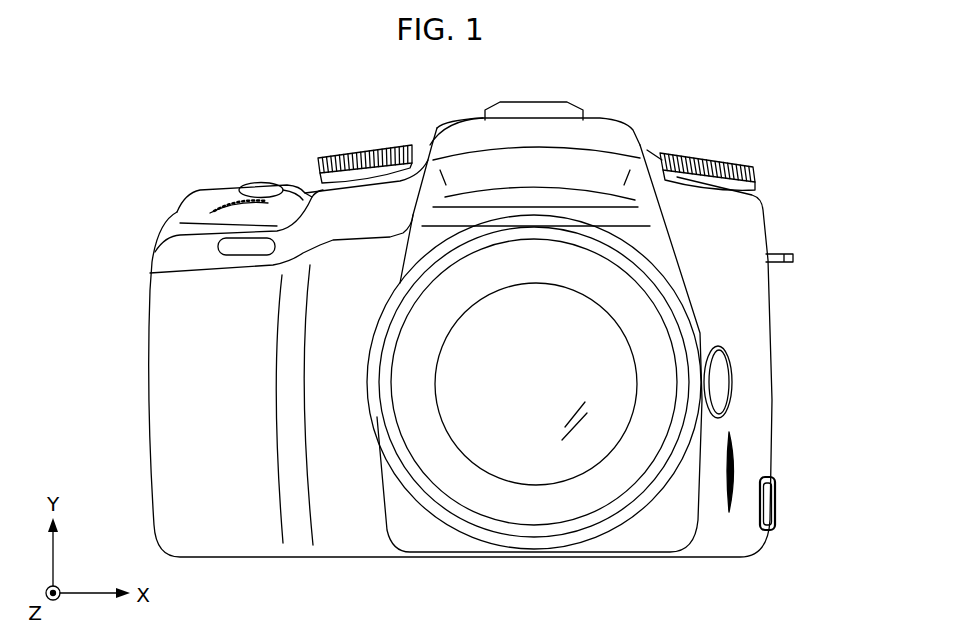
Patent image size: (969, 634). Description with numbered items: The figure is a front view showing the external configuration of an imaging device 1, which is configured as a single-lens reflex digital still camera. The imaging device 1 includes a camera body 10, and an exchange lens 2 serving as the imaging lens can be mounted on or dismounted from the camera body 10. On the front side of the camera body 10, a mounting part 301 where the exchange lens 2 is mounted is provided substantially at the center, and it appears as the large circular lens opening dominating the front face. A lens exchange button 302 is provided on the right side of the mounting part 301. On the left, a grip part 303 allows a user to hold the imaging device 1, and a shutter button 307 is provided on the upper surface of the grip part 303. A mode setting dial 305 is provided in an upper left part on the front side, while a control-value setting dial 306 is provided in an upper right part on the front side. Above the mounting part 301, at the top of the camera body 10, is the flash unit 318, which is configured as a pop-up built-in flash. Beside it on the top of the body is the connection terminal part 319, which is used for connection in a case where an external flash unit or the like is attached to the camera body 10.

The imaging device 1 is at (113, 112).
The camera body 10 is at (176, 187).
The exchange lens 2 is at (623, 392).
The mounting part 301 is at (625, 537).
The lens exchange button 302 is at (722, 381).
The grip part 303 is at (165, 433).
The mode setting dial 305 is at (361, 150).
The control-value setting dial 306 is at (706, 157).
The shutter button 307 is at (263, 184).
The flash unit 318 is at (433, 124).
The connection terminal part 319 is at (541, 106).